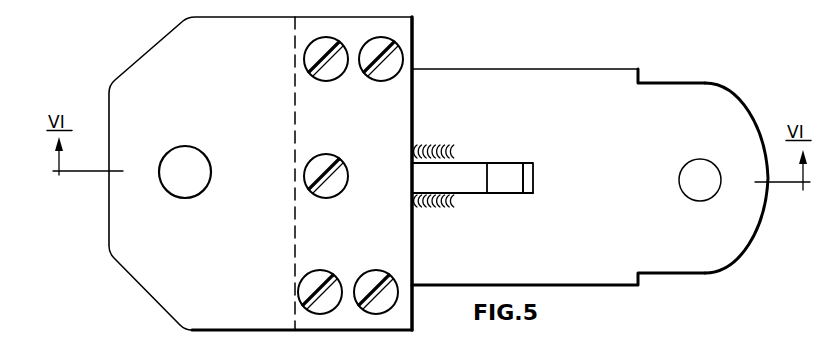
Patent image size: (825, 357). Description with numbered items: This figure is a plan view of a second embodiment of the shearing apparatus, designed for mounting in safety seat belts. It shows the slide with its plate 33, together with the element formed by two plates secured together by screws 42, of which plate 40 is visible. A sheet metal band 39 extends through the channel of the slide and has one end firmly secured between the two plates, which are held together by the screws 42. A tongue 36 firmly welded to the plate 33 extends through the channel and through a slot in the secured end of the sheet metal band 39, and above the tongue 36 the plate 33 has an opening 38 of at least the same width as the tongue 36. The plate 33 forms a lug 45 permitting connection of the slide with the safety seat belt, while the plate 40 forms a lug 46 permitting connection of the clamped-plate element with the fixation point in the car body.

The plate 33 is at (585, 81).
The tongue 36 is at (468, 168).
The opening 38 is at (513, 194).
The sheet metal band 39 is at (512, 170).
The plate 40 is at (246, 318).
The screws 42 is at (342, 284).
The lug 45 is at (740, 105).
The lug 46 is at (118, 181).